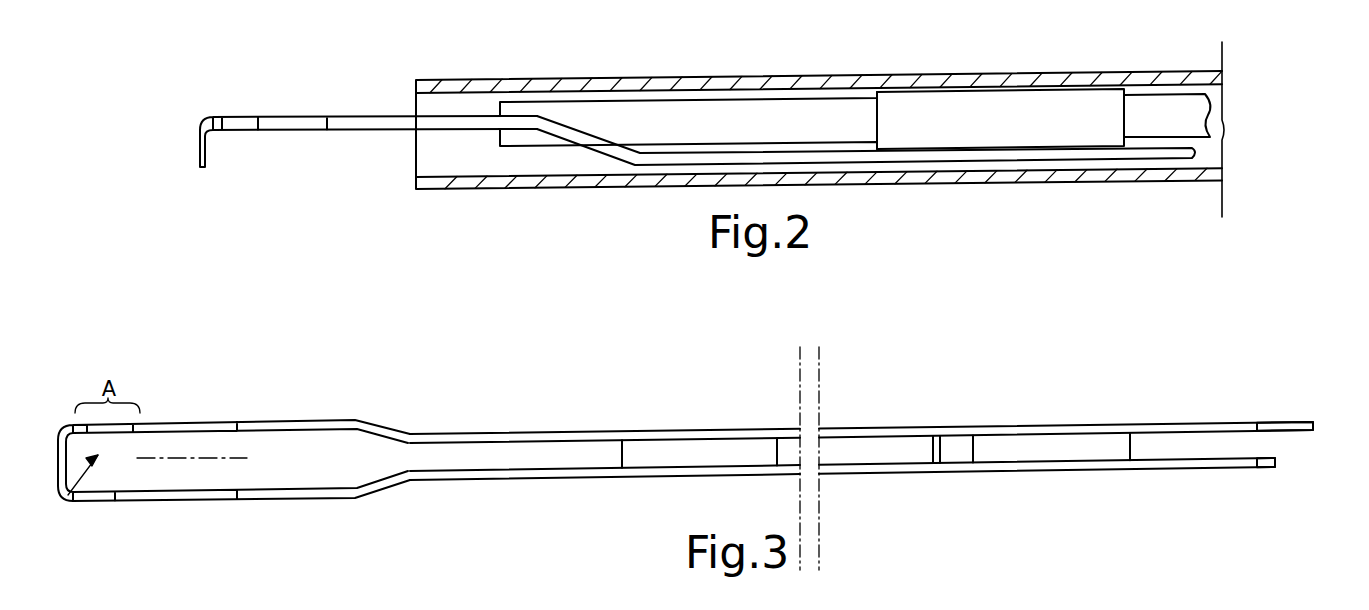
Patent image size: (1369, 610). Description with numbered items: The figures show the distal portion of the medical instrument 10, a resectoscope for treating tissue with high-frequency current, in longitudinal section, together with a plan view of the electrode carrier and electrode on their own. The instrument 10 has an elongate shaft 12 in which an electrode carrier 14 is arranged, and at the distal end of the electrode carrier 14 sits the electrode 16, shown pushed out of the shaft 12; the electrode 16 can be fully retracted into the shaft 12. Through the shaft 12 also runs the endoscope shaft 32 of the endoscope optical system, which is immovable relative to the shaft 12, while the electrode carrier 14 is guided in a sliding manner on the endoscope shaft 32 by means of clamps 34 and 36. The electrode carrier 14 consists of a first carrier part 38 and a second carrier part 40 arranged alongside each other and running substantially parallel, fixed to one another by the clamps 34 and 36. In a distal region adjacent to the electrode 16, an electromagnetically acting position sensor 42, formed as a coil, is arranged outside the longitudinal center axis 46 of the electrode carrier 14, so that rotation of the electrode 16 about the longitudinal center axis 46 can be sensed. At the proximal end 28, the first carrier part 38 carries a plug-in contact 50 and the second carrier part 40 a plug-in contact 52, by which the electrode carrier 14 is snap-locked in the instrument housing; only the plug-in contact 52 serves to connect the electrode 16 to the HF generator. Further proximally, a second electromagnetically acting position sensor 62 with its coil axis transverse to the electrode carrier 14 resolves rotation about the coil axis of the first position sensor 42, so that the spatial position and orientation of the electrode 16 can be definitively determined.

In FIG. 2, the medical instrument 10 is at (458, 203).
In FIG. 3, the medical instrument 10 is at (950, 403).
In FIG. 2, the shaft 12 is at (637, 83).
In FIG. 2, the electrode carrier 14 is at (952, 172).
In FIG. 3, the electrode carrier 14 is at (670, 422).
In FIG. 2, the electrode 16 is at (195, 153).
In FIG. 3, the electrode 16 is at (58, 425).
In FIG. 3, the proximal end 28 is at (1293, 420).
In FIG. 2, the endoscope shaft 32 is at (788, 120).
In FIG. 2, the clamp 34 is at (978, 117).
In FIG. 3, the clamp 34 is at (677, 455).
In FIG. 3, the clamp 36 is at (1050, 447).
In FIG. 3, the first carrier part 38 is at (515, 438).
In FIG. 3, the second carrier part 40 is at (520, 479).
In FIG. 3, the position sensor 42 is at (68, 498).
In FIG. 3, the longitudinal center axis 46 is at (220, 457).
In FIG. 3, the plug-in contact 50 is at (1267, 420).
In FIG. 3, the plug-in contact 52 is at (1260, 467).
In FIG. 3, the second position sensor 62 is at (933, 448).